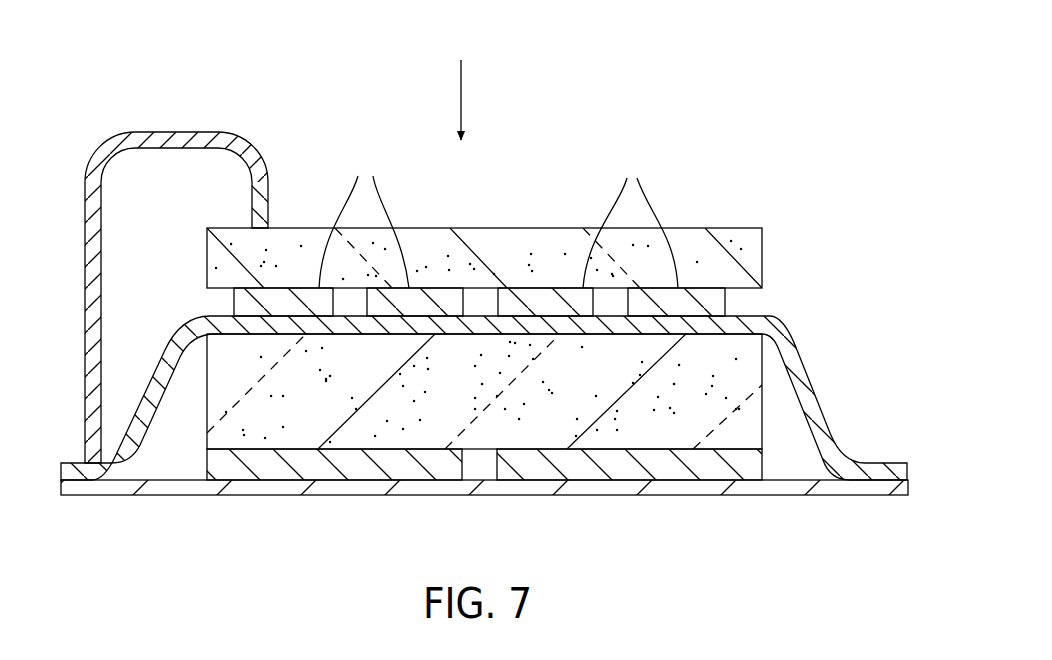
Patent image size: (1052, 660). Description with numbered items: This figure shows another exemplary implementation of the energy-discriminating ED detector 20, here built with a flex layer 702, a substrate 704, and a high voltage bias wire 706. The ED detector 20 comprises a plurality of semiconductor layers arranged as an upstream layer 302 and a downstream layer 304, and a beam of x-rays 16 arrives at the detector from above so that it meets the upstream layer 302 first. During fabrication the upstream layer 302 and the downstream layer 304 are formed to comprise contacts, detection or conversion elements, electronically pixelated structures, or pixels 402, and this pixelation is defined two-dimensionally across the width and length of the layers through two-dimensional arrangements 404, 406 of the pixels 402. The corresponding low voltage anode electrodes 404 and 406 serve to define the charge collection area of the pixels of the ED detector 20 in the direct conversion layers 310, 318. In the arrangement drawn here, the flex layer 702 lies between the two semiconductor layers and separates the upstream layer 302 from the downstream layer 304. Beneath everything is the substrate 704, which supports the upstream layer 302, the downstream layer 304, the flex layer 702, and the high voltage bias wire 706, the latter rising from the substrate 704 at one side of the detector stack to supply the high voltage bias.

The beam of x-rays 16 is at (460, 100).
The ED detector 20 is at (852, 100).
The upstream layer 302 is at (785, 250).
The downstream layer 304 is at (777, 415).
The direct conversion layer 310 is at (720, 230).
The direct conversion layer 318 is at (748, 363).
The pixels 402 is at (768, 542).
The anode electrodes 404 is at (217, 300).
The anode electrodes 406 is at (270, 505).
The flex layer 702 is at (165, 347).
The substrate 704 is at (602, 488).
The high voltage bias wire 706 is at (150, 132).